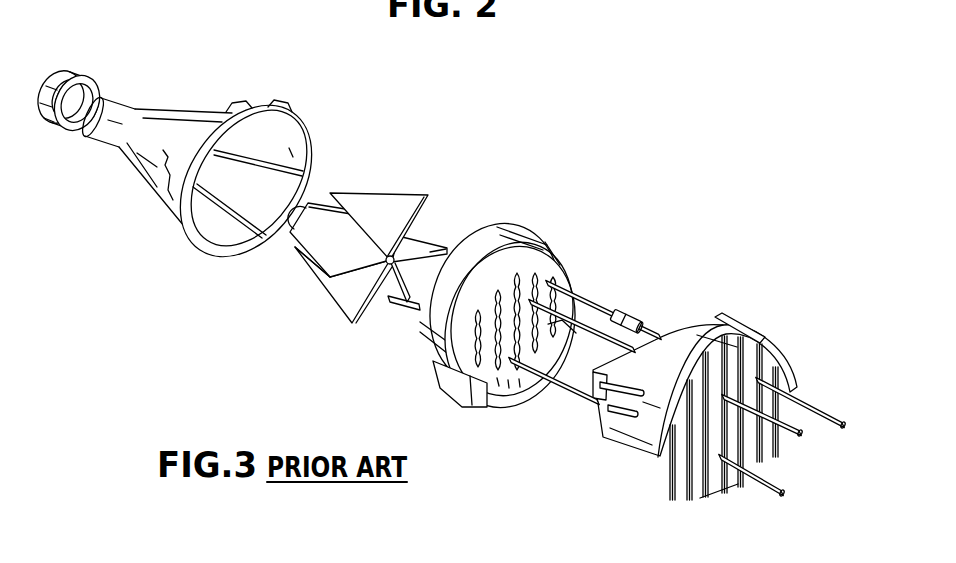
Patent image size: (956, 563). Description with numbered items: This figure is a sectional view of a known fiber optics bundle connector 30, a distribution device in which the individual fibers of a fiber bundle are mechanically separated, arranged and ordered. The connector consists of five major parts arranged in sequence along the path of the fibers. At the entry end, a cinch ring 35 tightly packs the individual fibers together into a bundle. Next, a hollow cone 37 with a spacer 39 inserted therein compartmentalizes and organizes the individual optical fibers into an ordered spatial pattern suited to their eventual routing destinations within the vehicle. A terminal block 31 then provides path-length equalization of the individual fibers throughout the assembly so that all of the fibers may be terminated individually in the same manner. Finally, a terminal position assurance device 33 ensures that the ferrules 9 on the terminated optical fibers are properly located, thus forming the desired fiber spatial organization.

The ferrules 9 is at (637, 319).
The fiber optics bundle connector 30 is at (500, 207).
The terminal block 31 is at (423, 347).
The terminal position assurance device (TPA) 33 is at (610, 440).
The cinch ring 35 is at (72, 70).
The hollow cone 37 is at (227, 115).
The spacer 39 is at (388, 205).